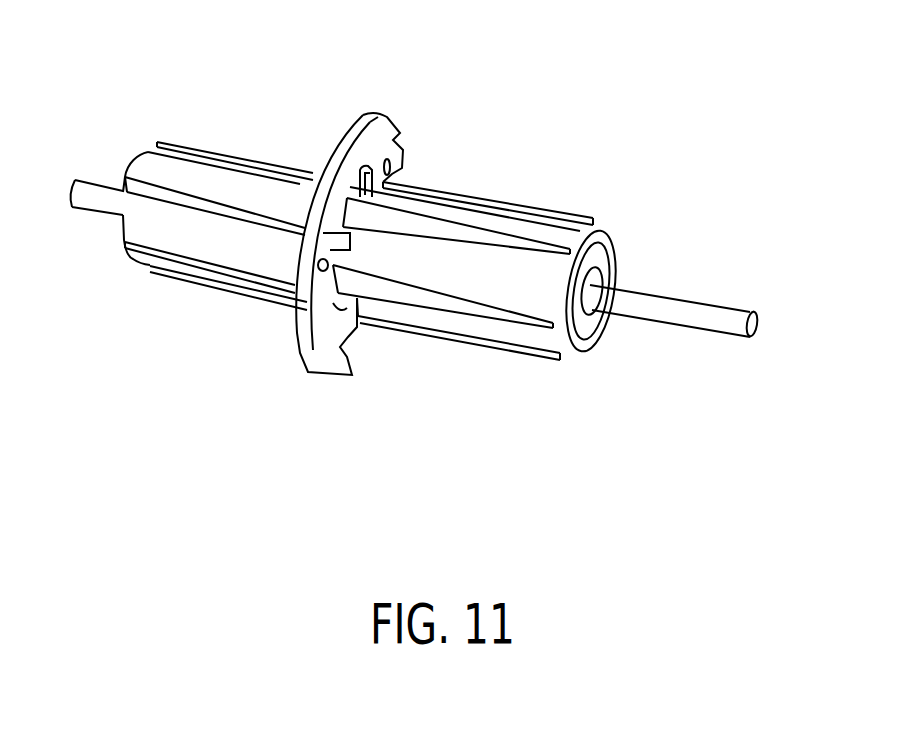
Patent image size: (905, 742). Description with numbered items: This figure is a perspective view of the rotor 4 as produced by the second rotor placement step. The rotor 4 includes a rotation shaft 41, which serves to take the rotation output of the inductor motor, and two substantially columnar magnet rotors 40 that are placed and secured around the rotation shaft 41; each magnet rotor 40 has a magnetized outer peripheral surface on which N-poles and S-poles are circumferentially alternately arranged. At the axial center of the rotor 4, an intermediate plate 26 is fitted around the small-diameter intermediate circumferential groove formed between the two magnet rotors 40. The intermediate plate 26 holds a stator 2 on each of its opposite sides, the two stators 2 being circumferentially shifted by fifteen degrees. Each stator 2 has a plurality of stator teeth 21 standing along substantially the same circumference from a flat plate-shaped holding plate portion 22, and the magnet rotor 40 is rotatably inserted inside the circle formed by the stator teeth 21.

The stator 2 is at (285, 142).
The rotor 4 is at (422, 345).
The stator teeth 21 is at (477, 235).
The holding plate portion 22 is at (350, 243).
The intermediate plate 26 is at (407, 147).
The magnet rotor 40 is at (515, 288).
The rotation shaft 41 is at (713, 315).